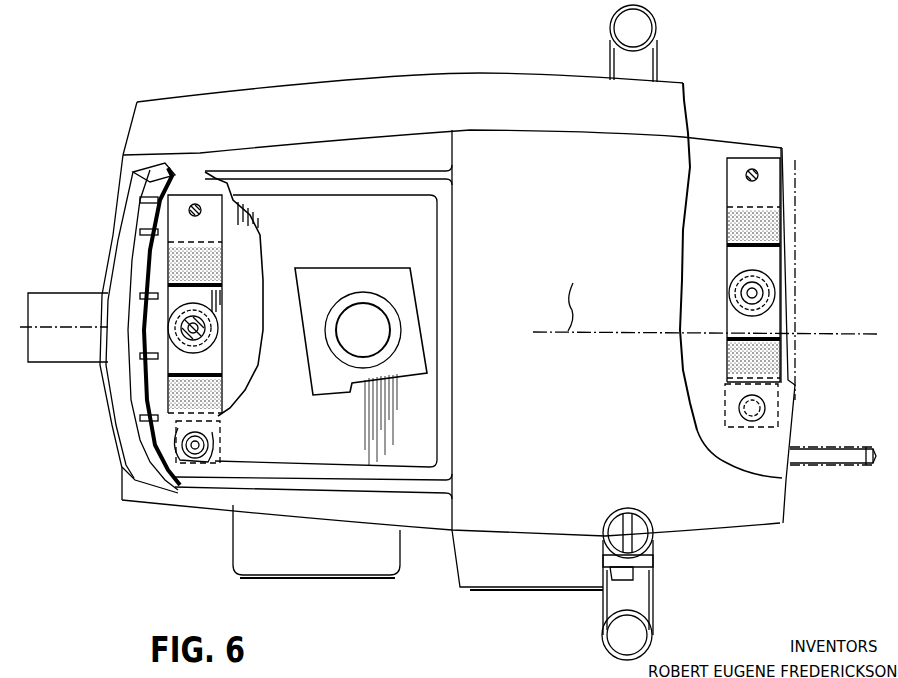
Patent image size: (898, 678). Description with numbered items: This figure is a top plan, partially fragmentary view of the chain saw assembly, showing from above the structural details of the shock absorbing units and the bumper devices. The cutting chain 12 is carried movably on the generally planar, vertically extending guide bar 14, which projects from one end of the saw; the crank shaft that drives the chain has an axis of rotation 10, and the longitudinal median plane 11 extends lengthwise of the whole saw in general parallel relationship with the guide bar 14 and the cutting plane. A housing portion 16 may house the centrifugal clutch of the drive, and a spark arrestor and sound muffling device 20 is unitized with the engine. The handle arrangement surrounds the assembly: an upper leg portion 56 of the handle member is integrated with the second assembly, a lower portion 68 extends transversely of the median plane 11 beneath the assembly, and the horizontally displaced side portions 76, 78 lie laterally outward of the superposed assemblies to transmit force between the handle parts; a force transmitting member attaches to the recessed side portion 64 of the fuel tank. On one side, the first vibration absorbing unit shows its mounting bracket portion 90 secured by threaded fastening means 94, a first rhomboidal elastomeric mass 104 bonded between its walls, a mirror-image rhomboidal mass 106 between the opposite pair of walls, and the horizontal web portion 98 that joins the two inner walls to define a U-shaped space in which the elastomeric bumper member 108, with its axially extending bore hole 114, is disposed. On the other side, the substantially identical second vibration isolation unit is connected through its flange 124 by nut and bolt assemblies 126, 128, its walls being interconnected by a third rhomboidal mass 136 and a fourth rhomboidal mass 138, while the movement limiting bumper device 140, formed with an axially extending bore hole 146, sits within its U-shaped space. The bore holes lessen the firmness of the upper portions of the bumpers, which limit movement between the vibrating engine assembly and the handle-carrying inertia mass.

The axis of rotation 10 is at (460, 0).
The lower portion of the handle member 68 is at (394, 65).
The side portion of the handle arrangement 78 is at (658, 32).
The nut and bolt assembly 128 is at (189, 210).
The flange 124 is at (185, 196).
The fourth rhomboidal mass 138 is at (173, 262).
The third rhomboidal mass 136 is at (173, 390).
The movement limiting bumper device 140 is at (213, 342).
The axially extending bore hole 146 is at (210, 323).
The nut and bolt assembly 126 is at (199, 445).
The upper leg portion 56 is at (52, 298).
The spark arrestor and sound muffling device 20 is at (253, 537).
The housing portion 16 is at (478, 558).
The recessed side portion of the fuel tank 64 is at (645, 512).
The side portion of the handle arrangement 76 is at (652, 637).
The mounting bracket portion 90 is at (737, 192).
The threaded fastening means 94 is at (762, 175).
The rhomboidal elastomeric mass 106 is at (770, 231).
The elastomeric bumper member 108 is at (732, 293).
The axially extending bore hole 114 is at (763, 293).
The horizontal web portion 98 is at (763, 323).
The rhomboidal elastomeric mass 104 is at (770, 363).
The longitudinal median plane 11 is at (575, 297).
The cutting chain 12 is at (805, 457).
The guide bar 14 is at (868, 448).